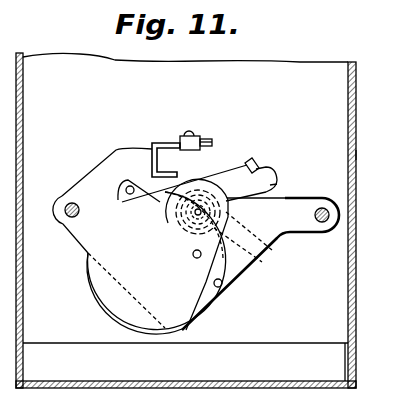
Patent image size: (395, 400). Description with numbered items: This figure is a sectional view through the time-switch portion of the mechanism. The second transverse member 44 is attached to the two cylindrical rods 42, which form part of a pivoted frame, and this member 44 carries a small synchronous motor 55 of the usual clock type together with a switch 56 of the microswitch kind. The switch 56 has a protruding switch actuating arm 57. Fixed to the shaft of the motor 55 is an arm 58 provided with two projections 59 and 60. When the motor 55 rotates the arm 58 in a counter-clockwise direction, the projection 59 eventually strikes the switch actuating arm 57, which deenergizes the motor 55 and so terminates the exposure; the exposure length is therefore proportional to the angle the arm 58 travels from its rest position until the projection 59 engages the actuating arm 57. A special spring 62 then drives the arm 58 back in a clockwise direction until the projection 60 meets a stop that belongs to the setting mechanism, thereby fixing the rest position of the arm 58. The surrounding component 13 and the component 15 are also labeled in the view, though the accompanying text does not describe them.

The tank 13 is at (356, 318).
The tank wall 15 is at (375, 156).
The cylindrical rod 42 is at (72, 203).
The second transverse member 44 is at (212, 306).
The synchronous motor 55 is at (89, 297).
The switch 56 is at (155, 132).
The switch actuating arm 57 is at (205, 135).
The arm 58 is at (222, 182).
The projection 59 is at (278, 184).
The projection 60 is at (270, 168).
The spring 62 is at (258, 256).